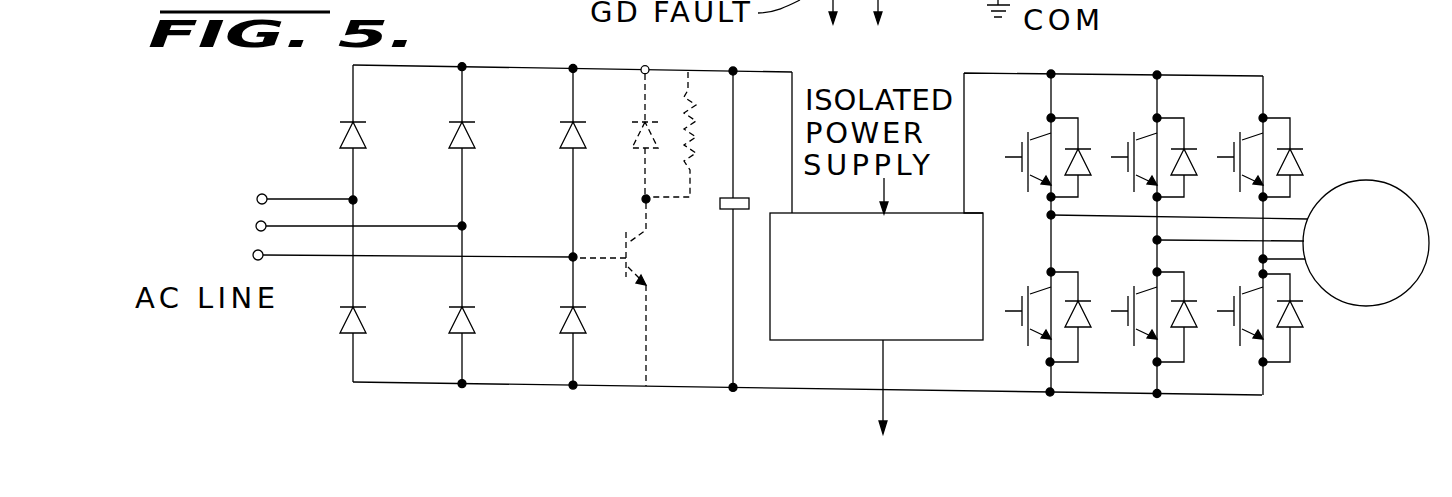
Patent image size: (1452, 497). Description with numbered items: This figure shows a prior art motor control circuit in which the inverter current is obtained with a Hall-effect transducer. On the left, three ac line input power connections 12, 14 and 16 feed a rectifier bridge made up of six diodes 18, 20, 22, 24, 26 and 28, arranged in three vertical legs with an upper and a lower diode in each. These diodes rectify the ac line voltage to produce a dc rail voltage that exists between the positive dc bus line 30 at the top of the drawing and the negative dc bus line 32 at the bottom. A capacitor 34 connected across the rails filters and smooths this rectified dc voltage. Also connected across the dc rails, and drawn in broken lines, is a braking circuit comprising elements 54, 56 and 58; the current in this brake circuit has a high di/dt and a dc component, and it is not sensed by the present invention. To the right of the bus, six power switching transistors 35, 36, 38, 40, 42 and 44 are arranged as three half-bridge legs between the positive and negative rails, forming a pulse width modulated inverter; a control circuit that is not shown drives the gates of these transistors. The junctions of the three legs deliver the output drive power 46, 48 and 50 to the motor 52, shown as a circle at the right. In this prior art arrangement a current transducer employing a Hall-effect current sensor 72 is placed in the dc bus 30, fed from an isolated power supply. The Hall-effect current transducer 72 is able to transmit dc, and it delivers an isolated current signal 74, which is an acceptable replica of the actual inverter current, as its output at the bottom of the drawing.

The ac line input power 12 is at (252, 254).
The ac line input power 14 is at (256, 225).
The ac line input power 16 is at (257, 197).
The diode 18 is at (451, 146).
The diode 20 is at (450, 332).
The diode 22 is at (561, 140).
The diode 24 is at (583, 333).
The diode 26 is at (341, 147).
The diode 28 is at (340, 322).
The positive dc bus line 30 is at (488, 66).
The negative dc bus line 32 is at (492, 385).
The capacitor 34 is at (720, 205).
The power switching transistor 35 is at (1048, 140).
The power switching transistor 36 is at (1062, 345).
The power switching transistor 38 is at (1167, 127).
The power switching transistor 40 is at (1170, 337).
The power switching transistor 42 is at (1273, 137).
The power switching transistor 44 is at (1275, 337).
The output drive power 46 is at (1296, 216).
The output drive power 48 is at (1305, 218).
The output drive power 50 is at (1317, 293).
The motor 52 is at (1392, 305).
The braking circuit element 54 is at (640, 258).
The braking circuit element 56 is at (697, 125).
The braking circuit element 58 is at (633, 143).
The Hall-effect current transducer 72 is at (792, 340).
The isolated current signal 74 is at (885, 399).